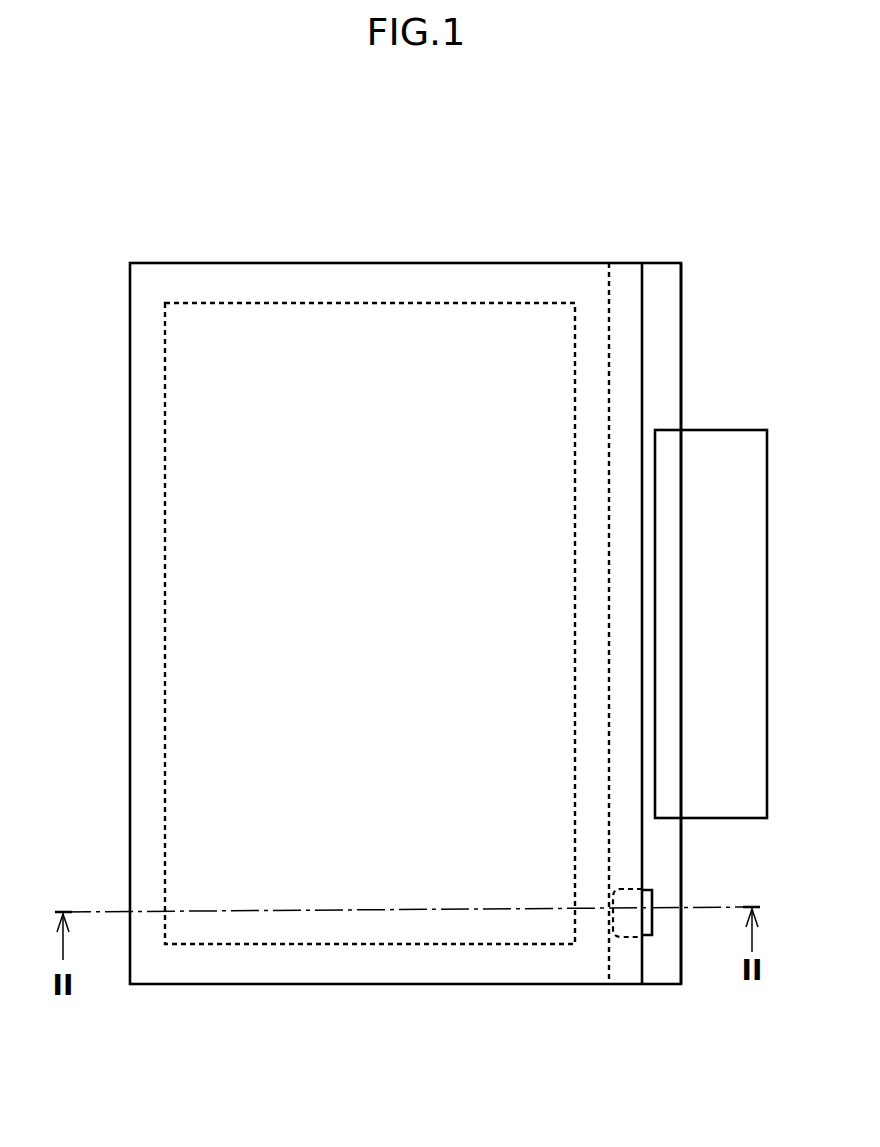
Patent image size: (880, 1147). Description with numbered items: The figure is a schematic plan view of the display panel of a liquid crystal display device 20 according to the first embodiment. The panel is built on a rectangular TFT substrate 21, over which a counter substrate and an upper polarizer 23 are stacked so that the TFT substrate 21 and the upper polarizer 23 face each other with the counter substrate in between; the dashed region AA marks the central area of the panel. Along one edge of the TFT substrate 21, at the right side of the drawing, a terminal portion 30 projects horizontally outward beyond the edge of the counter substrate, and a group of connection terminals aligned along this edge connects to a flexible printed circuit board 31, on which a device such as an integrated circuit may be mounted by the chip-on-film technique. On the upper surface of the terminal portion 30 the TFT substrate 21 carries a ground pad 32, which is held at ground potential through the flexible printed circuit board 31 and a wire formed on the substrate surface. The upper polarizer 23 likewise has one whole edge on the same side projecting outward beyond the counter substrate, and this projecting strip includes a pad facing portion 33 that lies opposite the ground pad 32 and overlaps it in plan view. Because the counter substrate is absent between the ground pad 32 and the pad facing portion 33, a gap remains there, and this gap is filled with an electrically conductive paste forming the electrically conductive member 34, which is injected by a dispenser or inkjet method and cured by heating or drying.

The liquid crystal display device 20 is at (183, 205).
The active area AA is at (458, 303).
The TFT substrate 21 is at (683, 290).
The upper polarizer 23 is at (645, 290).
The terminal portion 30 is at (609, 1036).
The flexible printed circuit board 31 is at (715, 430).
The ground pad 32 is at (648, 905).
The pad facing portion 33 is at (642, 994).
The electrically conductive member 34 is at (622, 880).